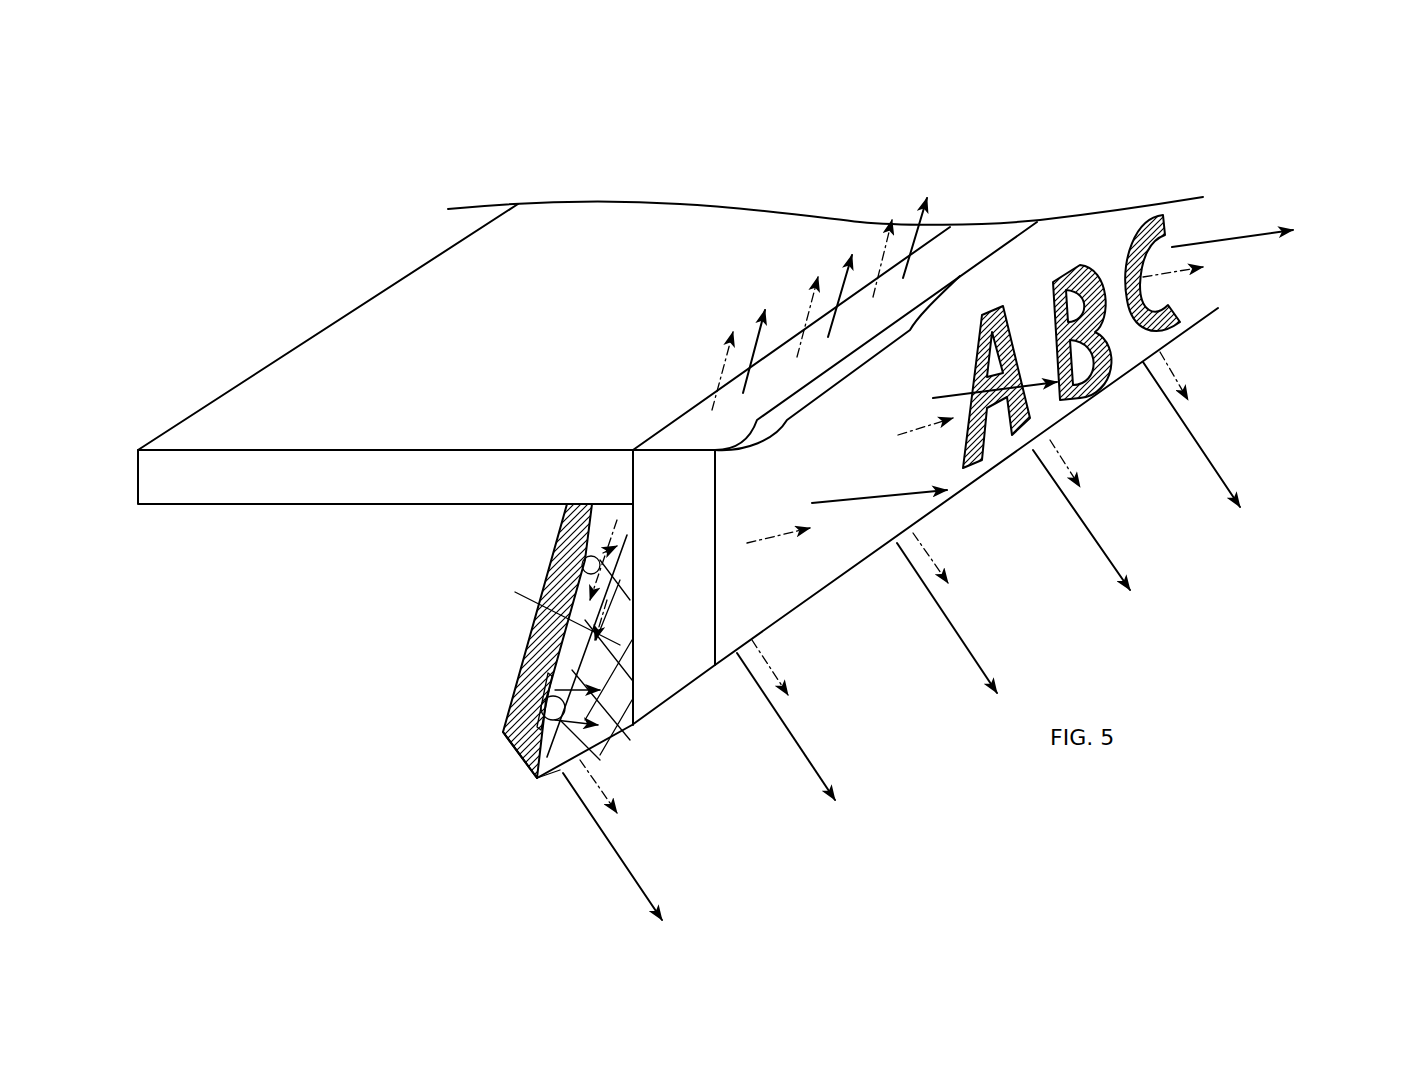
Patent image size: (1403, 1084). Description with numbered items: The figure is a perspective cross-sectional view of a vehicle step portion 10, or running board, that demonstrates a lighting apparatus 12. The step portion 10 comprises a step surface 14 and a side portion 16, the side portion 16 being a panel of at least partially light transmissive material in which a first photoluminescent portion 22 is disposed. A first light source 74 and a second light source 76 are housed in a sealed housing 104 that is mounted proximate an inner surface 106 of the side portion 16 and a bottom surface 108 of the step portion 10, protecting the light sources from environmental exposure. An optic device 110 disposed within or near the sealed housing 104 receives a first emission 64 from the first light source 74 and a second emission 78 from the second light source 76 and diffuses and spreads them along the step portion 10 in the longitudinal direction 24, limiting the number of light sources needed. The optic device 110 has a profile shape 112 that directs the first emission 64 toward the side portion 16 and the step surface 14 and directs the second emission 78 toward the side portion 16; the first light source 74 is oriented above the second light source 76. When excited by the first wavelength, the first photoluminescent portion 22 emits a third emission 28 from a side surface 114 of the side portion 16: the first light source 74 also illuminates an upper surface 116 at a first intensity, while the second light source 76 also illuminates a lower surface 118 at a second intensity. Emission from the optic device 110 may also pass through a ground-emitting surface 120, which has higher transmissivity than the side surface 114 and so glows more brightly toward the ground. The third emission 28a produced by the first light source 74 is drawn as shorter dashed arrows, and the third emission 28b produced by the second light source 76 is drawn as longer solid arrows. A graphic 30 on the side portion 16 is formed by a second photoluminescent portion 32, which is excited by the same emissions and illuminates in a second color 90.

The step portion 10 is at (260, 470).
The lighting apparatus 12 is at (832, 133).
The step surface 14 is at (387, 323).
The side portion 16 is at (842, 548).
The first photoluminescent portion 22 is at (770, 600).
The longitudinal direction 24 is at (876, 336).
The third emission 28 is at (896, 655).
The third emission in response to the first light source 28a is at (722, 377).
The third emission in response to the second light source 28b is at (753, 330).
The graphic 30 is at (1125, 340).
The second photoluminescent portion 32 is at (1199, 332).
The first emission 64 is at (600, 577).
The first light source 74 is at (593, 558).
The second light source 76 is at (552, 708).
The second emission 78 is at (590, 723).
The second color 90 is at (1250, 277).
The sealed housing 104 is at (530, 638).
The inner surface 106 is at (546, 612).
The bottom surface 108 is at (365, 505).
The optic device 110 is at (587, 665).
The profile shape 112 is at (530, 742).
The side surface 114 is at (792, 482).
The upper surface 116 is at (685, 435).
The lower surface 118 is at (585, 478).
The ground-emitting surface 120 is at (557, 773).